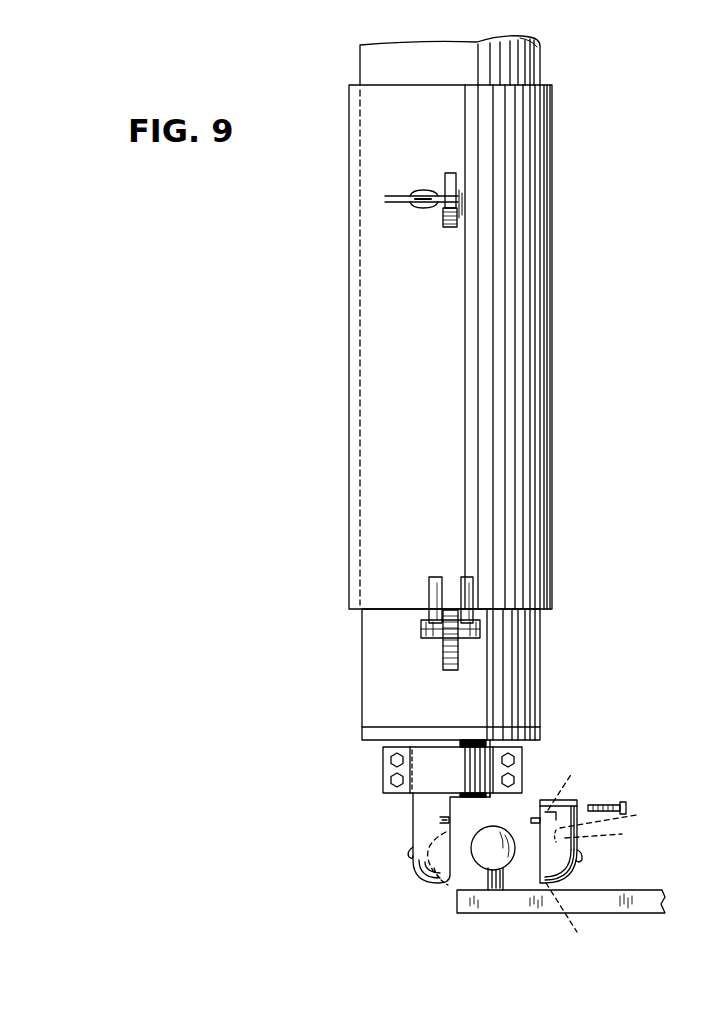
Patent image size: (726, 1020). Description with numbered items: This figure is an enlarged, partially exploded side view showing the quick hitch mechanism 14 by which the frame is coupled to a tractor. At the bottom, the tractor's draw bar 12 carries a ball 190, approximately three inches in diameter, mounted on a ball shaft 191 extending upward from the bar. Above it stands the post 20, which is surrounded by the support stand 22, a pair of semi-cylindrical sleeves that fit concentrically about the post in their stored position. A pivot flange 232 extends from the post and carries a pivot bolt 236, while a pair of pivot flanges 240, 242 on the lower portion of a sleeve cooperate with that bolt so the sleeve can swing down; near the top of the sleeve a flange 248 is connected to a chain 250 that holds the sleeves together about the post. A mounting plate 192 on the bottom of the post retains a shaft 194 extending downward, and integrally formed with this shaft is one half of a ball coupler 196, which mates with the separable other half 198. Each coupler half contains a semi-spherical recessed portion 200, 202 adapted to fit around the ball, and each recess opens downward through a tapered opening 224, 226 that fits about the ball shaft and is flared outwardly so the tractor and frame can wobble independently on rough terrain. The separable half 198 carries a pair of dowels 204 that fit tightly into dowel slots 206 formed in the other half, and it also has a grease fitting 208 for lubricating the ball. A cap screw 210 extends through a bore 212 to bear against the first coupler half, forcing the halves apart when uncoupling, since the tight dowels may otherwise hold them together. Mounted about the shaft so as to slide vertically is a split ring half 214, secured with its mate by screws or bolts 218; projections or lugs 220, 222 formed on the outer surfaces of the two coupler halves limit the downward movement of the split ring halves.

The draw bar 12 is at (652, 904).
The quick hitch mechanism 14 is at (630, 725).
The post 20 is at (368, 673).
The support stand 22 is at (348, 343).
The ball 190 is at (484, 854).
The ball shaft 191 is at (503, 882).
The mounting plate 192 is at (362, 731).
The shaft 194 is at (420, 797).
The ball coupler half 196 is at (413, 869).
The separable coupler half 198 is at (578, 871).
The semi-spherical recessed portion 200 is at (427, 875).
The semi-spherical recessed portion 202 is at (606, 838).
The dowels 204 is at (534, 818).
The dowel slots 206 is at (452, 820).
The grease fitting 208 is at (615, 818).
The cap screw 210 is at (610, 804).
The bore 212 is at (573, 791).
The split ring half 214 is at (383, 755).
The screws or bolts 218 is at (392, 780).
The projection or lug 220 is at (411, 848).
The projection or lug 222 is at (582, 857).
The tapered opening 224 is at (446, 884).
The tapered opening 226 is at (582, 910).
The pivot flange 232 is at (450, 650).
The pivot bolt 236 is at (421, 628).
The pivot flange 240 is at (468, 588).
The pivot flange 242 is at (435, 585).
The flange 248 is at (455, 183).
The chain 250 is at (421, 209).